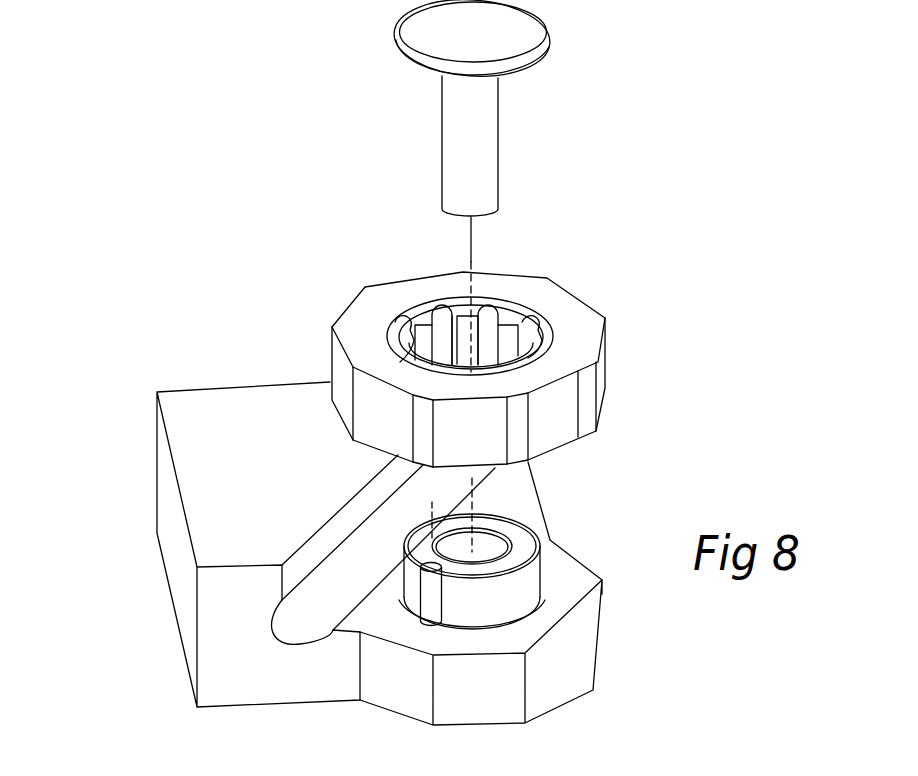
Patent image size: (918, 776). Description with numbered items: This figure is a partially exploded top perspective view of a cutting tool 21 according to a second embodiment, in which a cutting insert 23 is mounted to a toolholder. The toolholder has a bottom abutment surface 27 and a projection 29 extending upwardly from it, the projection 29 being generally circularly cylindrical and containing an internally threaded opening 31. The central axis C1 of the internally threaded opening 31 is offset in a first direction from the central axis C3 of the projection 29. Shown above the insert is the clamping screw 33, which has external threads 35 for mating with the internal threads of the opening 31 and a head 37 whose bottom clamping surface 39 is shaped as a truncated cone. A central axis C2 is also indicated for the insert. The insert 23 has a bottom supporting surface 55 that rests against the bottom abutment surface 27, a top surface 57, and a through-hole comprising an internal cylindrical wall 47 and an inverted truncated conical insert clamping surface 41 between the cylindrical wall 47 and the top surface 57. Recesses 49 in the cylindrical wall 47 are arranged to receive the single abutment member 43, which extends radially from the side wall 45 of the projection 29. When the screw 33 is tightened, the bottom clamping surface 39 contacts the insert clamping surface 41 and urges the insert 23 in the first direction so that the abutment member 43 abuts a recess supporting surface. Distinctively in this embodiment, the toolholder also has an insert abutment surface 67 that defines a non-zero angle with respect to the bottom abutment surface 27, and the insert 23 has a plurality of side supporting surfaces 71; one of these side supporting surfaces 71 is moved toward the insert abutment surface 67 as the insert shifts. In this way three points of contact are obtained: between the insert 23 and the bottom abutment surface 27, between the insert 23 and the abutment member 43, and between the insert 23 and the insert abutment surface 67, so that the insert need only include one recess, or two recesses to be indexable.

The cutting tool 21 is at (400, 500).
The cutting insert 23 is at (480, 356).
The bottom abutment surface 27 is at (632, 637).
The projection 29 is at (405, 582).
The internally threaded opening 31 is at (450, 545).
The clamping screw 33 is at (492, 108).
The external threads 35 is at (452, 145).
The head 37 is at (422, 28).
The bottom clamping surface 39 is at (430, 72).
The insert clamping surface 41 is at (548, 336).
The abutment member 43 is at (433, 592).
The side wall 45 is at (528, 575).
The internal cylindrical wall 47 is at (423, 343).
The recesses 49 is at (488, 308).
The bottom supporting surface 55 is at (368, 445).
The top surface 57 is at (358, 338).
The insert abutment surface 67 is at (280, 598).
The side supporting surfaces 71 is at (467, 428).
The central axis of the internally threaded opening C1 is at (472, 237).
The nut axis C2 is at (468, 290).
The central axis of the projection C3 is at (472, 480).